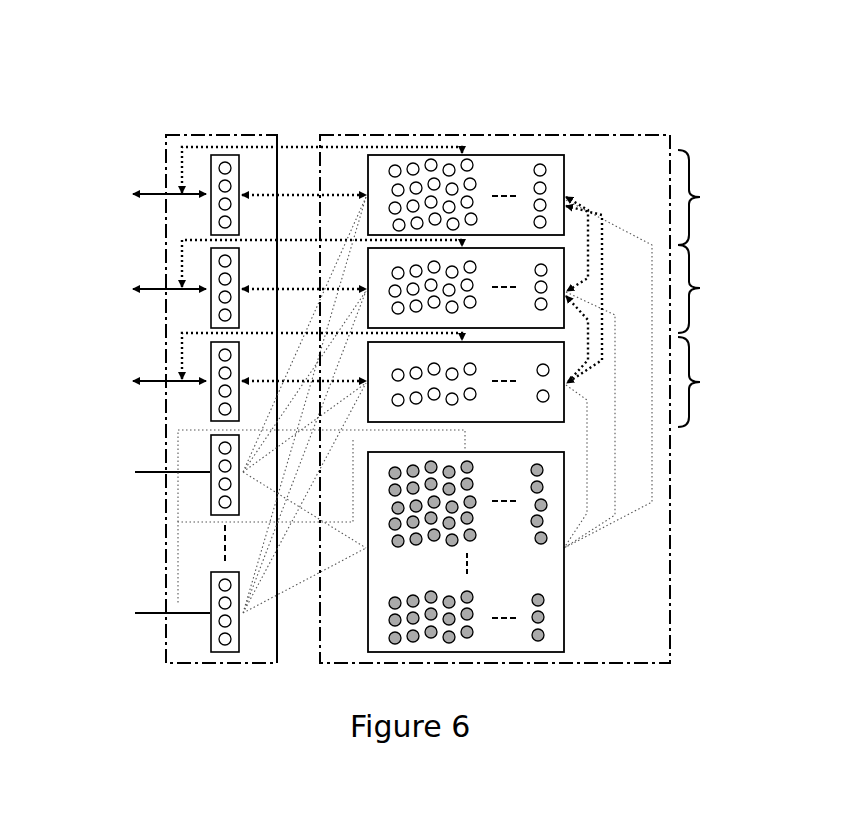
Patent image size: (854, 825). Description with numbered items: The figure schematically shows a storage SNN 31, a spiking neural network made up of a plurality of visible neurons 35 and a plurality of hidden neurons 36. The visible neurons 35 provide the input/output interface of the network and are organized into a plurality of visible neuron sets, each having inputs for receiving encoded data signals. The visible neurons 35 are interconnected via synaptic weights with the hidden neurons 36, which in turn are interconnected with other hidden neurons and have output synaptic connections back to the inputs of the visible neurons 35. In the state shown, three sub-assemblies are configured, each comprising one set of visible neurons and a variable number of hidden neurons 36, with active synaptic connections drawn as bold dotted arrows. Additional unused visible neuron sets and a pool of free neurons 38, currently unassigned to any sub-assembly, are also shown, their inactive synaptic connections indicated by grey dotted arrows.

The storage SNN 31 is at (688, 98).
The visible neurons 35 is at (221, 399).
The hidden neurons 36 is at (495, 399).
The free neurons 38 is at (466, 552).